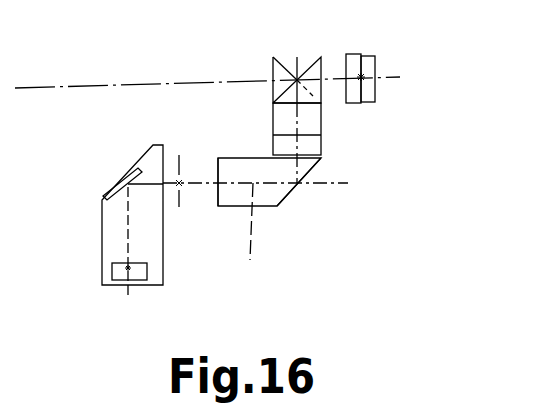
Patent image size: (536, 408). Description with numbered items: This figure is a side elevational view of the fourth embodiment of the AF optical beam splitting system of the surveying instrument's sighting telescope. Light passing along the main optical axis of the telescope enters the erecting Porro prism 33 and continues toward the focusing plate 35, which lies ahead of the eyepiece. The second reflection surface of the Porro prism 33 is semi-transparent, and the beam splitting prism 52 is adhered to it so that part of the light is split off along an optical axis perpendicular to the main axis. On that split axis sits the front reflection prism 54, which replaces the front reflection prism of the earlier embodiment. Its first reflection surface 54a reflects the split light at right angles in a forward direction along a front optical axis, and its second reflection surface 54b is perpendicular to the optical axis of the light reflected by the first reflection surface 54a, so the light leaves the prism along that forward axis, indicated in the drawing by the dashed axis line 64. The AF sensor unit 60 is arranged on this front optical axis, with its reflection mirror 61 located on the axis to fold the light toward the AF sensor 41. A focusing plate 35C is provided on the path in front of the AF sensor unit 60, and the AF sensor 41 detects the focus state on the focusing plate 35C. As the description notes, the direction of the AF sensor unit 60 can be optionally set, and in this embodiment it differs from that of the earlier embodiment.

The erecting prism (Porro prism) 33 is at (298, 58).
The focusing plate 35 is at (365, 54).
The focusing plate 35C is at (179, 207).
The AF sensor 41 is at (138, 273).
The beam splitting prism 52 is at (313, 142).
The front reflection prism 54 is at (277, 193).
The first reflection surface 54a is at (298, 188).
The second reflection surface 54b is at (217, 168).
The AF sensor unit 60 is at (101, 232).
The reflection mirror 61 is at (120, 185).
The optical axis 64 is at (248, 237).